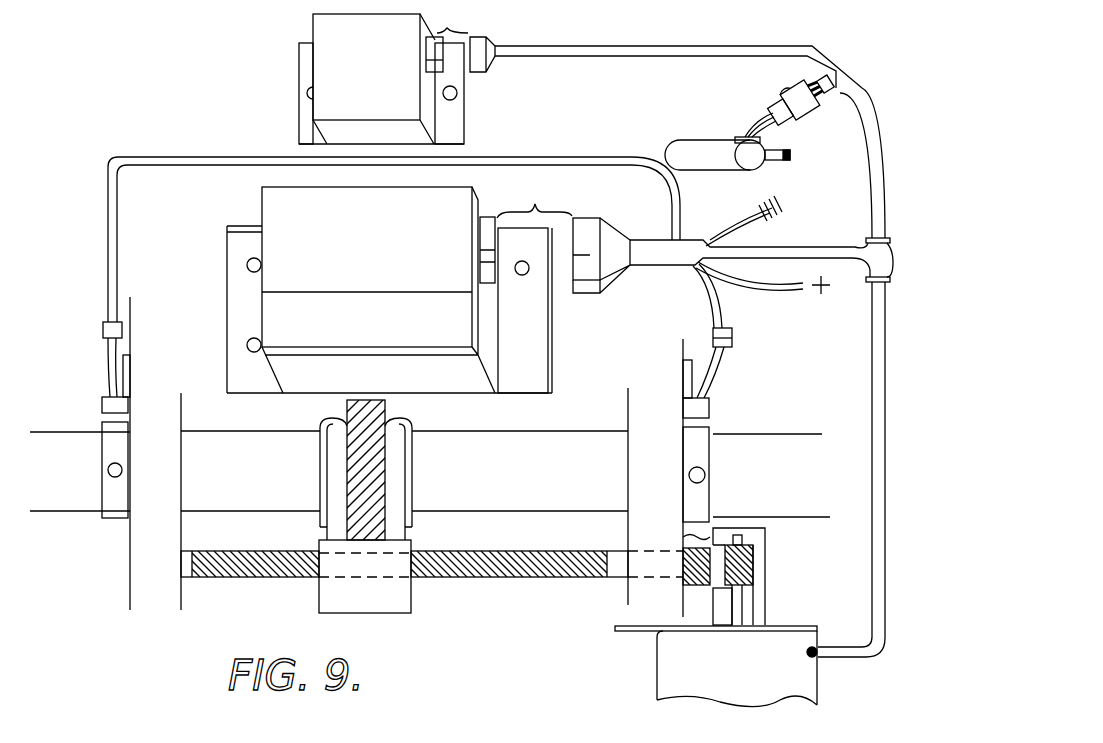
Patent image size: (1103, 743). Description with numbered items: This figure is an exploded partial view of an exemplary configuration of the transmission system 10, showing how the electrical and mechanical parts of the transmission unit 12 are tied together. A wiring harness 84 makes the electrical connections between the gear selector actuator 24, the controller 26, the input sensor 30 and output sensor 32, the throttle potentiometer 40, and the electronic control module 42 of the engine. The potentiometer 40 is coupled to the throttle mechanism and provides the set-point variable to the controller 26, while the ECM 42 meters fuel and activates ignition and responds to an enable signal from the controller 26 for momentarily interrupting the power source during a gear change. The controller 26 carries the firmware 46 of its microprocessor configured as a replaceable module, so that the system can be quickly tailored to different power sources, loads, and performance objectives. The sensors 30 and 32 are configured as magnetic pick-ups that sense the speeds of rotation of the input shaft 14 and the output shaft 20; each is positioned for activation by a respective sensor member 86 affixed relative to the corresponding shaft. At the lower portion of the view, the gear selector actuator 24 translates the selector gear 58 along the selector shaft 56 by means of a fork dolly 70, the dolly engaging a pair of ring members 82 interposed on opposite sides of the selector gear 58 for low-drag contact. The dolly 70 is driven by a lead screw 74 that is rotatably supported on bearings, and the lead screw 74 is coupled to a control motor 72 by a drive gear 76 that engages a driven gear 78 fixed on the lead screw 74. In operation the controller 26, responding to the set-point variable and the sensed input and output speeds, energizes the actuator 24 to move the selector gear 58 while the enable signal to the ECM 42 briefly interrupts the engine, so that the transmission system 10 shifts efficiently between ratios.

The transmission system 10 is at (189, 638).
The transmission unit 12 is at (128, 596).
The input shaft 14 is at (770, 434).
The output shaft 20 is at (86, 431).
The gear selector actuator 24 is at (767, 603).
The controller 26 is at (262, 205).
The input sensor 30 is at (705, 396).
The output sensor 32 is at (108, 388).
The throttle potentiometer 40 is at (665, 142).
The electronic control module 42 is at (465, 113).
The firmware 46 is at (381, 337).
The selector shaft 56 is at (246, 497).
The selector gear 58 is at (347, 477).
The fork dolly 70 is at (319, 598).
The control motor 72 is at (733, 676).
The lead screw 74 is at (520, 578).
The drive gear 76 is at (750, 572).
The driven gear 78 is at (692, 586).
The ring members 82 is at (320, 452).
The wiring harness 84 is at (785, 250).
The sensor members 86 is at (108, 462).